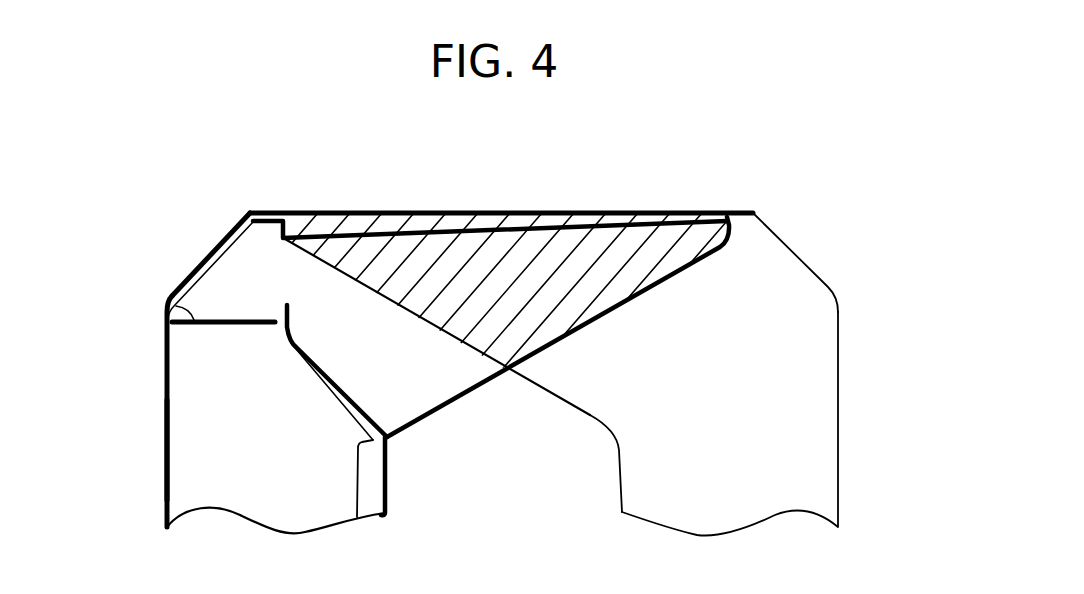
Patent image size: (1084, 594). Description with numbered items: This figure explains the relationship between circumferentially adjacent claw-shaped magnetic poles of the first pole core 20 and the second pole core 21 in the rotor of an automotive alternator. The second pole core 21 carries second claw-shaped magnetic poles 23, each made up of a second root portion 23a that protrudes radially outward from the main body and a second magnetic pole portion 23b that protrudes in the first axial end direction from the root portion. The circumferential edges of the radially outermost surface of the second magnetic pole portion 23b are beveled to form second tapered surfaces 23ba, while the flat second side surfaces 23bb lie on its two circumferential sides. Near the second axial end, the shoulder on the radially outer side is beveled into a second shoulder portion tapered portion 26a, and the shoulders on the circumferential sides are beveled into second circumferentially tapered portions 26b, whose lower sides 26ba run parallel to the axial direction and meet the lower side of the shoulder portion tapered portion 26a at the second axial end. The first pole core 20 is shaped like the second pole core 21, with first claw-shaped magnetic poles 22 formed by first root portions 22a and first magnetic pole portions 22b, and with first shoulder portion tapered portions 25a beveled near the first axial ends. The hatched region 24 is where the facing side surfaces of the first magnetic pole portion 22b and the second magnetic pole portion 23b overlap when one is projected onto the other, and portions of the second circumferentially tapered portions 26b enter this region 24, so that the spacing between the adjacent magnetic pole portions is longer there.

The first pole core 20 is at (780, 220).
The second pole core 21 is at (247, 210).
The first claw-shaped magnetic poles 22 is at (917, 353).
The first root portions 22a is at (718, 468).
The first magnetic pole portions 22b is at (680, 331).
The second claw-shaped magnetic poles 23 is at (93, 402).
The second root portions 23a is at (275, 497).
The second magnetic pole portions 23b is at (290, 350).
The second tapered surfaces 23ba is at (365, 223).
The second side surfaces 23bb is at (288, 305).
The region 24 is at (552, 257).
The first shoulder portion tapered portions 25a is at (810, 265).
The second shoulder portion tapered portions 26a is at (200, 248).
The second circumferentially tapered portions 26b is at (203, 265).
The lower sides 26ba is at (190, 311).